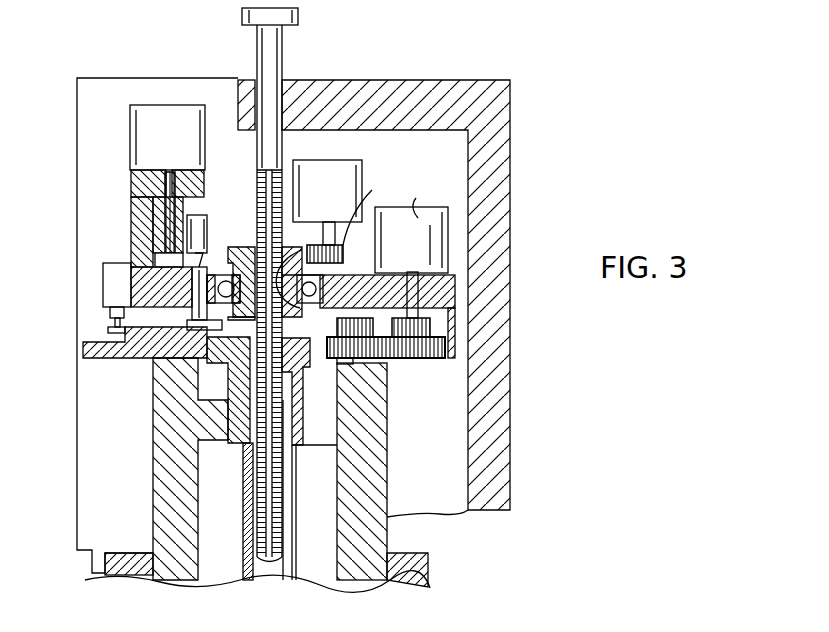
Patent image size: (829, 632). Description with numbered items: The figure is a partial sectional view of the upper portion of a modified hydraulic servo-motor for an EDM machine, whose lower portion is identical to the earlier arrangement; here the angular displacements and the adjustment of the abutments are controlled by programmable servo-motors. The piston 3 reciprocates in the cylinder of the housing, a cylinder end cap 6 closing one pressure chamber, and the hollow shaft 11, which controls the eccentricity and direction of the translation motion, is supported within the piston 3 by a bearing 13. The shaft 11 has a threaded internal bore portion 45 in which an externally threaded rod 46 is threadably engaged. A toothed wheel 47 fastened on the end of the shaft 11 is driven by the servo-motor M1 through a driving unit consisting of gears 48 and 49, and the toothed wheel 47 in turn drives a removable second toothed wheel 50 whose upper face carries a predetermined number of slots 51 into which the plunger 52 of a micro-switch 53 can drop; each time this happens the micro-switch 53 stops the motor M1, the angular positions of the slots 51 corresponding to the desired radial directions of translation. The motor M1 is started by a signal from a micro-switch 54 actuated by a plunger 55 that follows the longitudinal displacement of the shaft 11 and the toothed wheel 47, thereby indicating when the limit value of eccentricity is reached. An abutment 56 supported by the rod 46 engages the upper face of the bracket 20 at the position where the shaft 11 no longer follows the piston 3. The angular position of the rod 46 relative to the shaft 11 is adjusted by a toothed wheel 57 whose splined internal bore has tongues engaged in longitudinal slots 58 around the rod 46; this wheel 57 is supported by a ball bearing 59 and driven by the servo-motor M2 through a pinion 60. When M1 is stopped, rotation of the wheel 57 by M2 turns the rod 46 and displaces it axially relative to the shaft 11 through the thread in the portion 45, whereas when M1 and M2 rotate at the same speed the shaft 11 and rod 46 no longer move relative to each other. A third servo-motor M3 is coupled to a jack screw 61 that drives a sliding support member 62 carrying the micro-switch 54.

The piston 3 is at (375, 531).
The cylinder end cap 6 is at (130, 556).
The shaft 11 is at (287, 567).
The bearing 13 is at (297, 447).
The bracket 20 is at (485, 96).
The threaded internal bore portion 45 is at (246, 312).
The threaded rod 46 is at (262, 501).
The toothed wheel 47 is at (302, 391).
The gear 48 is at (386, 359).
The gear 49 is at (428, 359).
The second toothed wheel 50 is at (128, 360).
The slots 51 is at (110, 336).
The plunger 52 is at (108, 331).
The micro-switch 53 is at (103, 272).
The micro-switch 54 is at (208, 236).
The plunger 55 is at (196, 323).
The abutment 56 is at (298, 15).
The toothed wheel 57 is at (299, 293).
The longitudinal slots 58 is at (257, 186).
The ball bearing 59 is at (341, 246).
The pinion 60 is at (373, 209).
The jack screw 61 is at (153, 201).
The sliding support member 62 is at (190, 213).
The servo-motor M1 is at (415, 227).
The servo-motor M2 is at (327, 191).
The servo-motor M3 is at (167, 137).